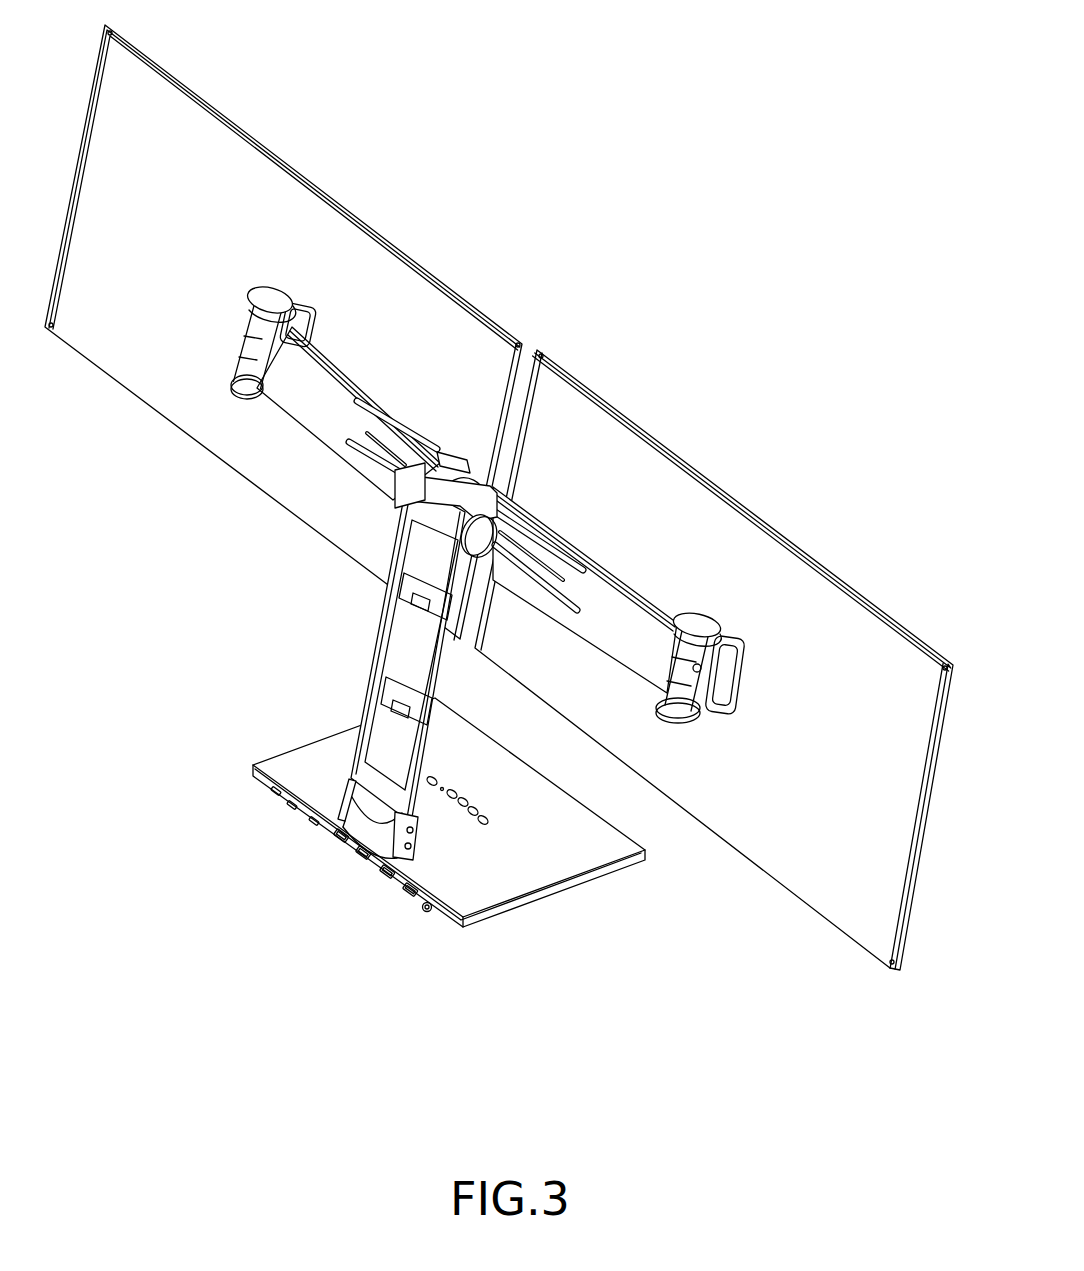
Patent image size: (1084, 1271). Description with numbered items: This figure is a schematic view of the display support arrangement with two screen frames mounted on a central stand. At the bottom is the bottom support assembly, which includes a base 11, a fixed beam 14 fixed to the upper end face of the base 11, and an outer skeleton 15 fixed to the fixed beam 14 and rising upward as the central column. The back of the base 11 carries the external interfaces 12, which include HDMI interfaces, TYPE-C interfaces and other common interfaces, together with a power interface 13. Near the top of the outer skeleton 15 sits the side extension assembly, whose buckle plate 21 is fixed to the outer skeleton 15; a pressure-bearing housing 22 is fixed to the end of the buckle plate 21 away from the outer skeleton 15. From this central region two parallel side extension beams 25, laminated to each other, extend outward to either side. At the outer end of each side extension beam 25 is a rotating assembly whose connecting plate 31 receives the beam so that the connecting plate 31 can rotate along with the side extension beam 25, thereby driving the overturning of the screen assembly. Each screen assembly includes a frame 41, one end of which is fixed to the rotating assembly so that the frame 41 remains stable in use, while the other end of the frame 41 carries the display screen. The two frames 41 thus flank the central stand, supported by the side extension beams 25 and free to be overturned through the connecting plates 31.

The base 11 is at (537, 900).
The external interfaces 12 is at (358, 858).
The power interface 13 is at (425, 913).
The fixed beam 14 is at (352, 810).
The outer skeleton 15 is at (363, 717).
The buckle plate 21 is at (480, 538).
The pressure-bearing housing 22 is at (445, 470).
The side extension beam 25 is at (620, 613).
The connecting plate 31 is at (272, 300).
The frame 41 is at (203, 195).